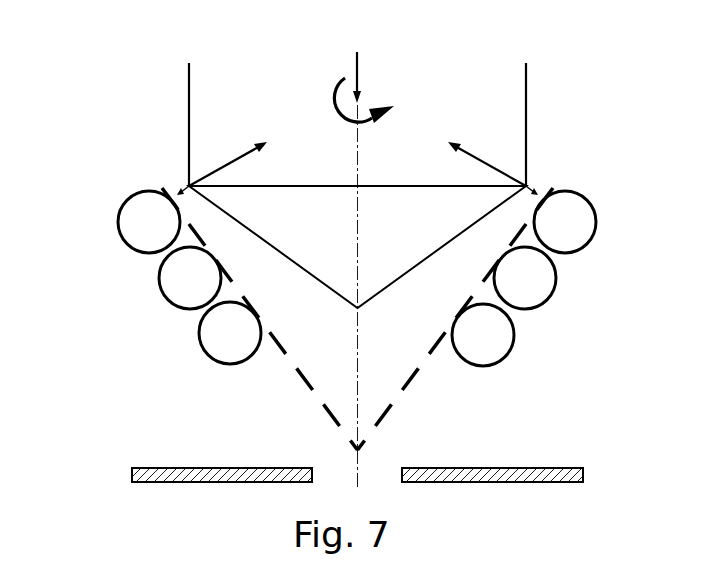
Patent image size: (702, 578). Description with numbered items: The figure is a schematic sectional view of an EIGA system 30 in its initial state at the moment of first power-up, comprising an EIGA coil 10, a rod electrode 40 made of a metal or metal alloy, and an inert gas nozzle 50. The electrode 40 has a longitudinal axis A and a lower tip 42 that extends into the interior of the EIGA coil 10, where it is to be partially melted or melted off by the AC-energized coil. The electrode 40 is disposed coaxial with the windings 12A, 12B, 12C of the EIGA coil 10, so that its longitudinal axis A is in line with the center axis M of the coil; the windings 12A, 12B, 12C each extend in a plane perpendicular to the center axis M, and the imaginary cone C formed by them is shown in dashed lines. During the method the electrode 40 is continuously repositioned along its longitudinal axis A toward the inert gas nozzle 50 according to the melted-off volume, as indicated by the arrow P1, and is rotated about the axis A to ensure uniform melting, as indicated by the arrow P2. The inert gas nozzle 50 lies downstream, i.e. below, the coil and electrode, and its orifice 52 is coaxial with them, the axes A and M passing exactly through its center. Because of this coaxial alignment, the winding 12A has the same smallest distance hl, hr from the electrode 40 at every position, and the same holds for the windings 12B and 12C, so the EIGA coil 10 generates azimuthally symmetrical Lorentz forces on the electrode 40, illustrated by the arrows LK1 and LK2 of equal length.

The EIGA coil 10 is at (130, 311).
The winding 12A is at (590, 218).
The winding 12B is at (545, 278).
The winding 12C is at (503, 335).
The EIGA system 30 is at (103, 90).
The electrode 40 is at (498, 90).
The lower tip 42 is at (390, 265).
The inert gas nozzle 50 is at (585, 478).
The orifice 52 is at (339, 468).
The longitudinal axis A is at (362, 138).
The center axis M is at (362, 343).
The imaginary cone C is at (403, 393).
The arrow LK1 is at (230, 161).
The arrow LK2 is at (497, 168).
The arrow P1 is at (361, 66).
The arrow P2 is at (333, 104).
The smallest distance hl is at (176, 179).
The smallest distance hr is at (539, 180).